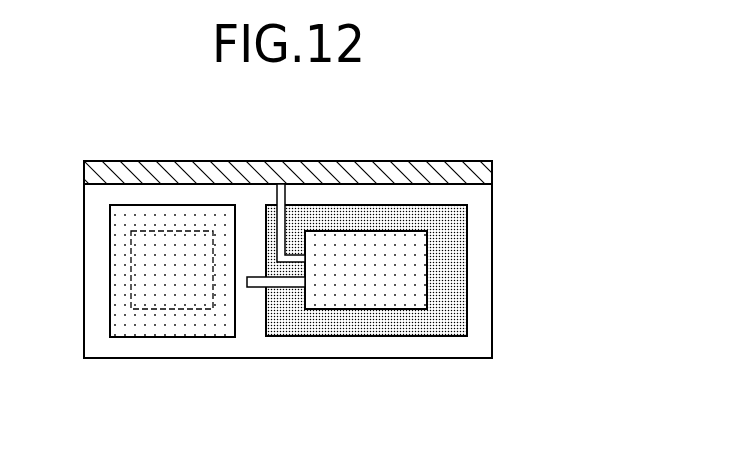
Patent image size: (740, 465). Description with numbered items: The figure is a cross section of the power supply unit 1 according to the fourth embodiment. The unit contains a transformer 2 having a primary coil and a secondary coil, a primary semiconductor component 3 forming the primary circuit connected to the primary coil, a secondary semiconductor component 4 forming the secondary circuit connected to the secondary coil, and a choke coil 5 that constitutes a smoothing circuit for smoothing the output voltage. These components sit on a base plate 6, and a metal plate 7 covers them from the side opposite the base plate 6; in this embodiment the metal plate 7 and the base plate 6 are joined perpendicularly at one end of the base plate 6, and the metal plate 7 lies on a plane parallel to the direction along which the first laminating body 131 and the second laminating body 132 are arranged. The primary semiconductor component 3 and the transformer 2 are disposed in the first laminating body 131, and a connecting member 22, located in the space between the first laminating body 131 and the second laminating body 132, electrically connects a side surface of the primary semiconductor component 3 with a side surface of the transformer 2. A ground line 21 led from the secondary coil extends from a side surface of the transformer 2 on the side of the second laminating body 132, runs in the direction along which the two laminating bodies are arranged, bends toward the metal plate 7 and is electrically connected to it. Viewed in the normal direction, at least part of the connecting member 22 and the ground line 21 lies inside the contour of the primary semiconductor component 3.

The power supply unit 1 is at (491, 148).
The transformer 2 is at (363, 255).
The primary semiconductor component 3 is at (373, 322).
The secondary semiconductor component 4 is at (180, 300).
The choke coil 5 is at (152, 255).
The base plate 6 is at (252, 328).
The metal plate 7 is at (467, 173).
The ground line 21 is at (275, 198).
The connecting member 22 is at (280, 288).
The first laminating body 131 is at (338, 202).
The second laminating body 132 is at (179, 202).